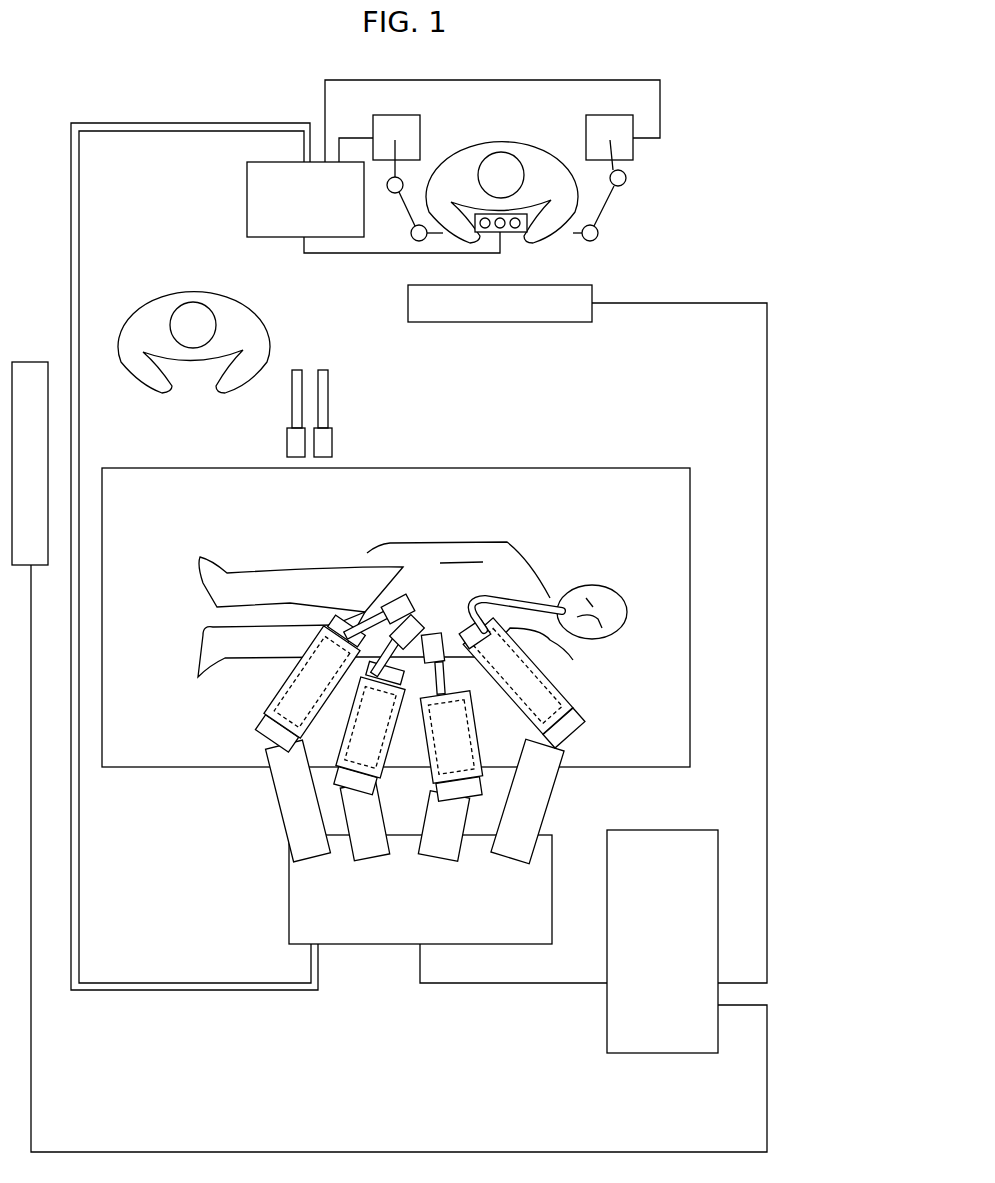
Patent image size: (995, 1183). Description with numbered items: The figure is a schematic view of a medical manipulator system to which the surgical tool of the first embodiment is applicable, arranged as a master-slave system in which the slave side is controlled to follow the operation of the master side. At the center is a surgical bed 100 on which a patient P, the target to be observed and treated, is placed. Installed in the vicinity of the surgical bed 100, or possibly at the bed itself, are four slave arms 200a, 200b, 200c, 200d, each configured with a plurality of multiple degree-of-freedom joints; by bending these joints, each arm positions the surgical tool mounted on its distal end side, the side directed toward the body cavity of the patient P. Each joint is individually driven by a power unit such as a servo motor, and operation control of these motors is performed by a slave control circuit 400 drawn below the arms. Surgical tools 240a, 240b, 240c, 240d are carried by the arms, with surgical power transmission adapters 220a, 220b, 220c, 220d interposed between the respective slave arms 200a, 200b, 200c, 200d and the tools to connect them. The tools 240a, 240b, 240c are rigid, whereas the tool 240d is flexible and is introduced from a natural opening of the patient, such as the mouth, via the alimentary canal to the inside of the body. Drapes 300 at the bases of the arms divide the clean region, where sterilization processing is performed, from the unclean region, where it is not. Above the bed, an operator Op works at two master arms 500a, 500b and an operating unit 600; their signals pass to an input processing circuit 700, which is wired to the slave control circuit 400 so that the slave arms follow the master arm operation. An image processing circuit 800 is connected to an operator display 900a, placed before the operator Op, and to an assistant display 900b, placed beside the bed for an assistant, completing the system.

The surgical bed 100 is at (623, 466).
The slave arm 200a is at (297, 655).
The slave arm 200b is at (287, 720).
The slave arm 200c is at (460, 730).
The slave arm 200d is at (560, 683).
The surgical power transmission adapter 220a is at (330, 640).
The surgical power transmission adapter 220b is at (300, 703).
The surgical power transmission adapter 220c is at (547, 703).
The surgical power transmission adapter 220d is at (547, 650).
The surgical tool 240a is at (402, 600).
The surgical tool 240b is at (417, 615).
The surgical tool 240c is at (432, 628).
The surgical tool 240d is at (490, 597).
The drape 300 is at (257, 738).
The slave control circuit 400 is at (289, 887).
The master arm 500a is at (410, 245).
The master arm 500b is at (613, 202).
The operating unit 600 is at (511, 236).
The input processing circuit 700 is at (247, 190).
The image processing circuit 800 is at (668, 1054).
The operator display 900a is at (503, 323).
The assistant display 900b is at (30, 360).
The operator Op is at (498, 145).
The patient P is at (628, 611).